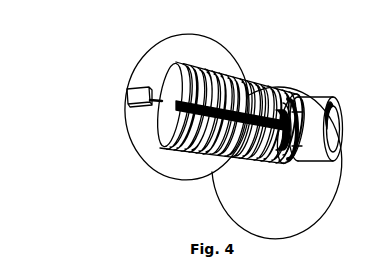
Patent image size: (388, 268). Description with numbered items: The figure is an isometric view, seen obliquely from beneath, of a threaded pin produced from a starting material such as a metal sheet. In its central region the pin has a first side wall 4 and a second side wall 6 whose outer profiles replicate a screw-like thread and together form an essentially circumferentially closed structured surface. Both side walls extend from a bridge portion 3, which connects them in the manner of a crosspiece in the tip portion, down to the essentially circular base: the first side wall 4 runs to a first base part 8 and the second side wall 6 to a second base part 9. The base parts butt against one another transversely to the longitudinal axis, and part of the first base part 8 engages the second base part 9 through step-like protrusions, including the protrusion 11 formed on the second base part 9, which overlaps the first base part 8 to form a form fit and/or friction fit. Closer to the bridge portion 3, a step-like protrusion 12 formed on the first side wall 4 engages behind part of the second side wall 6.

The bridge portion 3 is at (322, 148).
The first side wall 4 is at (270, 83).
The second side wall 6 is at (283, 157).
The first base part 8 is at (224, 48).
The second base part 9 is at (172, 178).
The step-like protrusion 11 is at (128, 104).
The step-like protrusion 12 is at (266, 163).